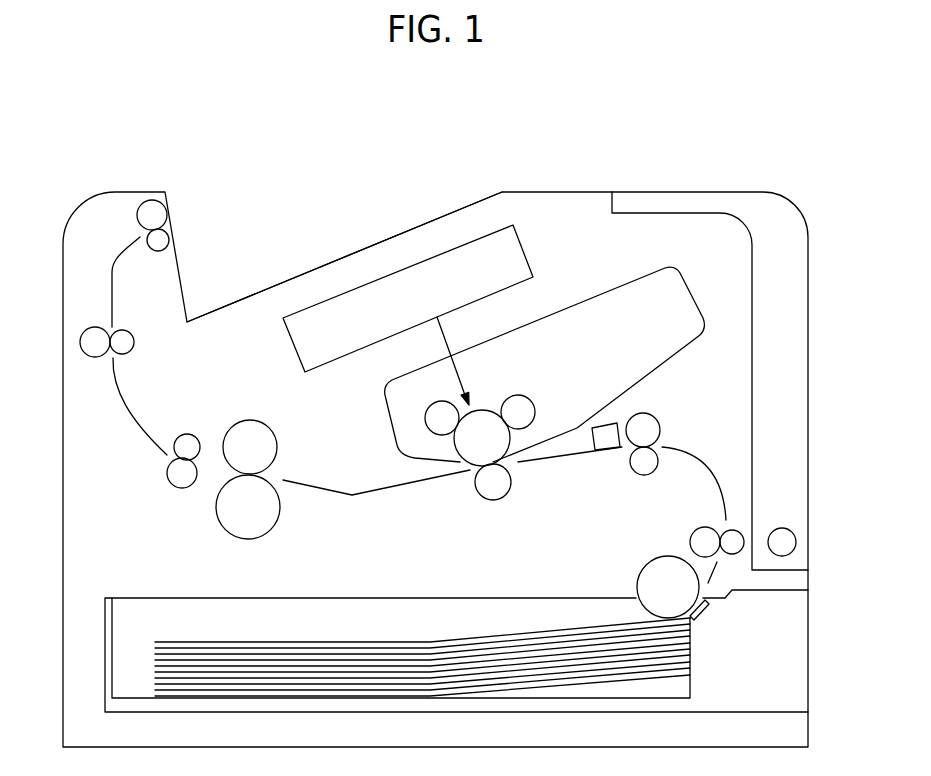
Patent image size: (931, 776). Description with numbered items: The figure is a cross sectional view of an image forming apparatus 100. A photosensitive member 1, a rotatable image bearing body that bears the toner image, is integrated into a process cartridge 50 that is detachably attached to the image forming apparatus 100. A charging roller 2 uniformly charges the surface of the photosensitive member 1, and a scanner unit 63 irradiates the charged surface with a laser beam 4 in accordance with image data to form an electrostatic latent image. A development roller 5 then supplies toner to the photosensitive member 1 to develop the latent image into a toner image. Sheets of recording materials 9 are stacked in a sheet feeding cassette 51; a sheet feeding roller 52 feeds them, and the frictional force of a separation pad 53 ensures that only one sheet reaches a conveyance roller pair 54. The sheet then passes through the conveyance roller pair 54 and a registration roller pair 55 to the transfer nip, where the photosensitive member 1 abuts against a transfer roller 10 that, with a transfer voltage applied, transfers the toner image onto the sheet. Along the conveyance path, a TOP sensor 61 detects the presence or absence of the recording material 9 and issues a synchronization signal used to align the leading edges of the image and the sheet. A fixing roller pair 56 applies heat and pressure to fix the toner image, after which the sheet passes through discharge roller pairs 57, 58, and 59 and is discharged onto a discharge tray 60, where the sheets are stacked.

The image forming apparatus 100 is at (112, 191).
The photosensitive member 1 is at (478, 447).
The charging roller 2 is at (436, 416).
The laser beam 4 is at (447, 333).
The development roller 5 is at (523, 404).
The recording materials 9 is at (255, 648).
The transfer roller 10 is at (495, 485).
The process cartridge 50 is at (635, 298).
The sheet feeding cassette 51 is at (355, 596).
The sheet feeding roller 52 is at (636, 585).
The separation pad 53 is at (708, 606).
The conveyance roller pair 54 is at (690, 542).
The registration roller pair 55 is at (653, 412).
The fixing roller pair 56 is at (245, 418).
The discharge roller pair 57 is at (182, 488).
The discharge roller pair 58 is at (97, 357).
The discharge roller pair 59 is at (152, 217).
The discharge tray 60 is at (303, 272).
The TOP sensor 61 is at (606, 450).
The scanner unit 63 is at (510, 250).